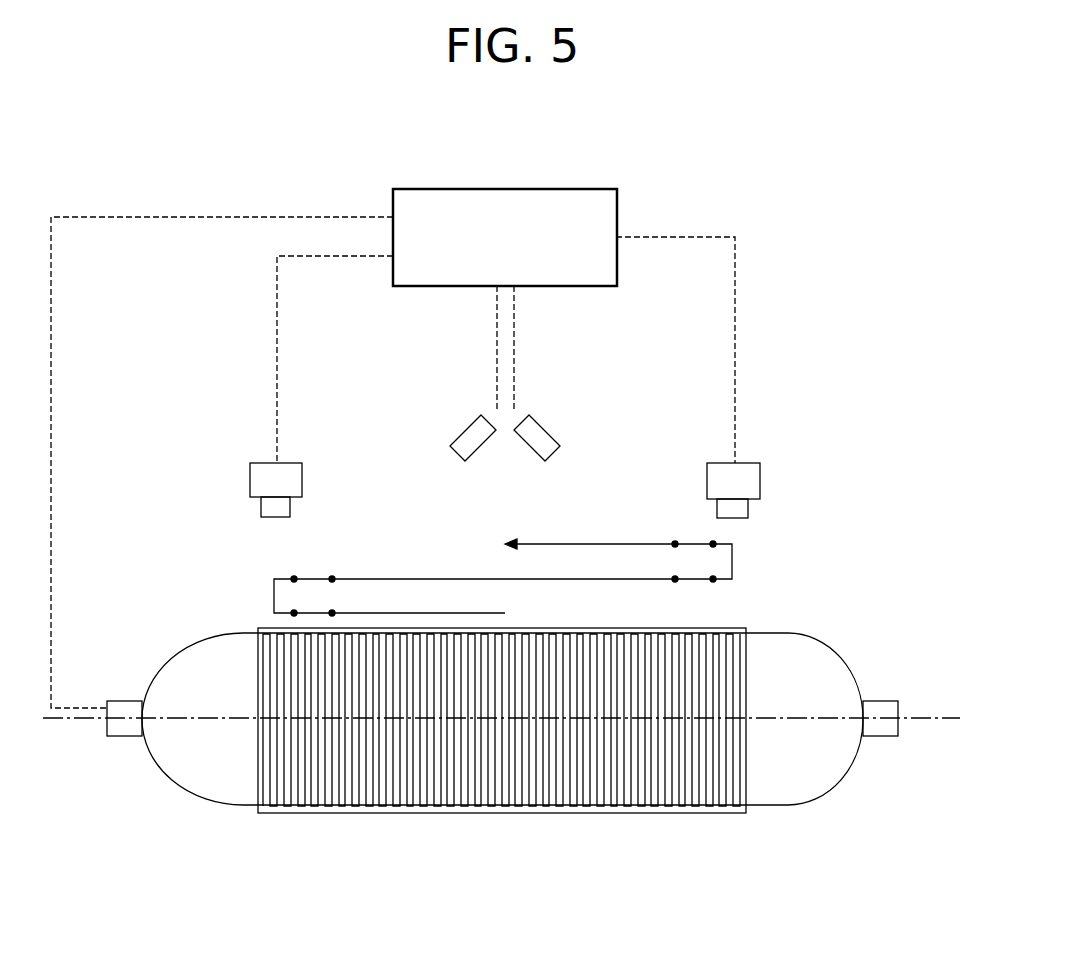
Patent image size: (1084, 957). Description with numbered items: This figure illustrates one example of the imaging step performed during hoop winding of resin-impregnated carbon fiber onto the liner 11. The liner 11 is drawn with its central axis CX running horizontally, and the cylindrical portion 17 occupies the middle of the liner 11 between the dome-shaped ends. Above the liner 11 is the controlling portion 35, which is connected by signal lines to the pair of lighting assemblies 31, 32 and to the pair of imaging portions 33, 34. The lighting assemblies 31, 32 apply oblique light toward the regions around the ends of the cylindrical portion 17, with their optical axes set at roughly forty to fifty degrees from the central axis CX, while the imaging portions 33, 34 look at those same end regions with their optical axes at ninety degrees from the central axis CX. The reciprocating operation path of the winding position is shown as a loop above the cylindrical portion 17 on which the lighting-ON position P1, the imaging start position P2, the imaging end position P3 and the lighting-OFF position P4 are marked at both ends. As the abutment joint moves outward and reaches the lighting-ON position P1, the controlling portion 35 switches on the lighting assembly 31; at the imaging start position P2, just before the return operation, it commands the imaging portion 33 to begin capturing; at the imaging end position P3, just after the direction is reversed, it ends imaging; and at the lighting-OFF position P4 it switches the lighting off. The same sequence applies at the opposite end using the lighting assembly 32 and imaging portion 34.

The liner 11 is at (806, 630).
The cylindrical portion 17 is at (253, 632).
The lighting assembly 31 is at (460, 432).
The lighting assembly 32 is at (548, 432).
The imaging portion 33 is at (250, 478).
The imaging portion 34 is at (760, 480).
The controlling portion 35 is at (570, 189).
The lighting-ON position P1 is at (333, 611).
The imaging start position P2 is at (294, 614).
The imaging end position P3 is at (294, 578).
The lighting-OFF position P4 is at (332, 578).
The central axis CX is at (928, 717).